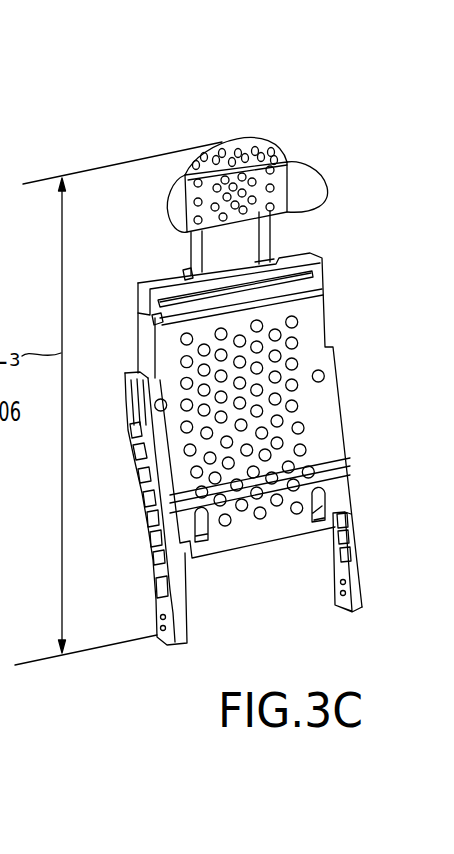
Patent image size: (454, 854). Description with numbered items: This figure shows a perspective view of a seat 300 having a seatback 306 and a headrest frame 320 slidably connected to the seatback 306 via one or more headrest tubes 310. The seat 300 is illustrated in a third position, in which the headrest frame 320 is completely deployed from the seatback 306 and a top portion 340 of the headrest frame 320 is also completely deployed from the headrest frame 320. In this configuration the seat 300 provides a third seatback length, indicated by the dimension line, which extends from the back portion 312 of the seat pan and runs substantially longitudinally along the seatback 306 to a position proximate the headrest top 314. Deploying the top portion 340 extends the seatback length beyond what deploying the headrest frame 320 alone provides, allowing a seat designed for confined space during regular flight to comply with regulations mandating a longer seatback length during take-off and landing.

The seat 300 is at (221, 134).
The seatback 306 is at (320, 398).
The headrest tubes 310 is at (271, 226).
The back portion of a seat pan 312 is at (125, 644).
The headrest top 314 is at (247, 138).
The headrest frame 320 is at (302, 146).
The top portion of the headrest frame 340 is at (280, 147).